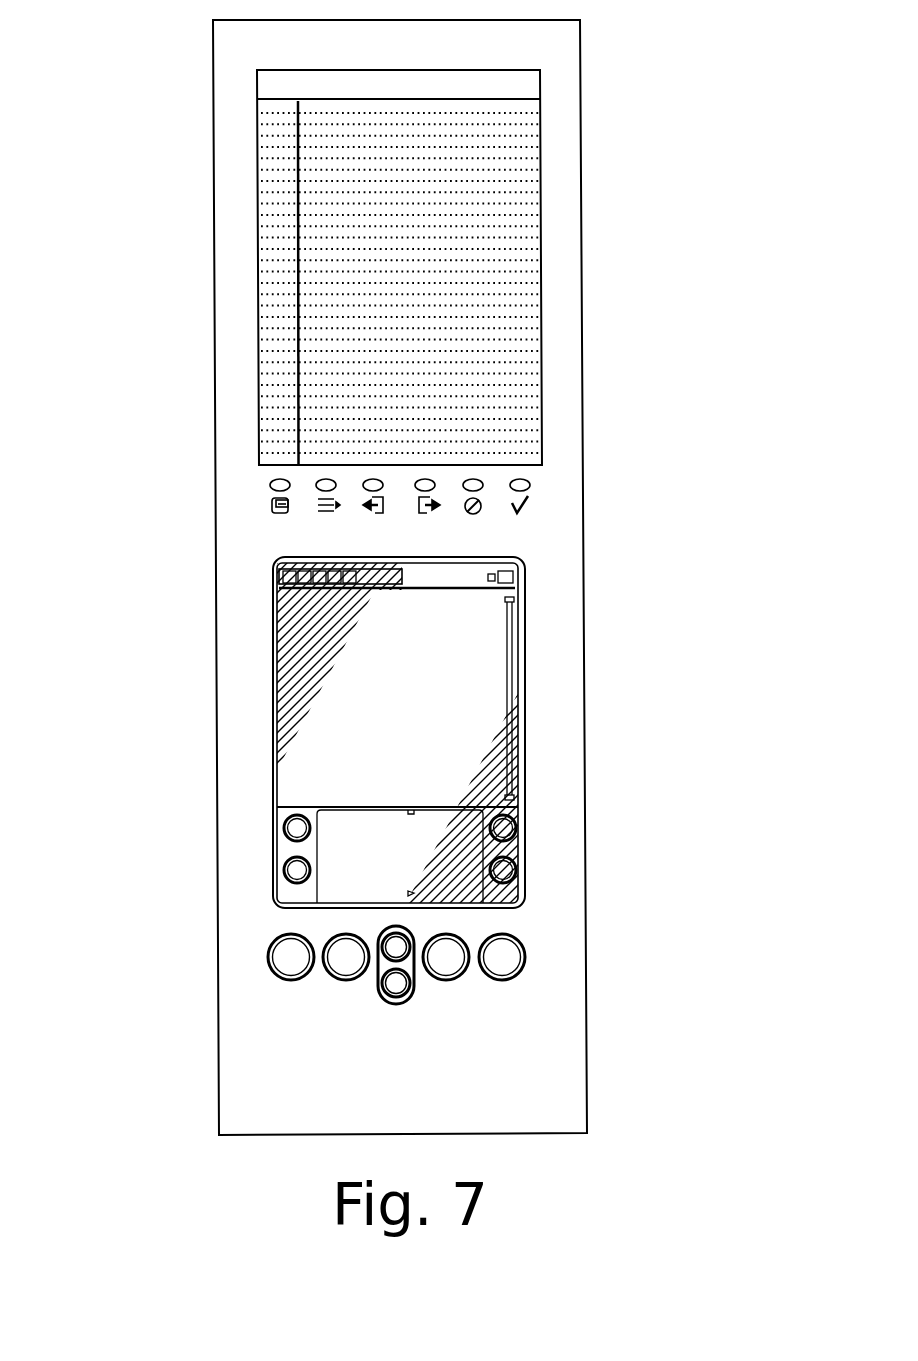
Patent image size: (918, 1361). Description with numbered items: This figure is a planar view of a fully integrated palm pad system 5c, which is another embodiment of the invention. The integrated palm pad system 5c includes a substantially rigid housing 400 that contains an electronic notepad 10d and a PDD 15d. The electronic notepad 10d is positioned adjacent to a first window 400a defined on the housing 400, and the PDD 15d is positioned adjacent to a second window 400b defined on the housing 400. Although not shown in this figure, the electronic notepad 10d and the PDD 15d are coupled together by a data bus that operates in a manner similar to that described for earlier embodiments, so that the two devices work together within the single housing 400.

The integrated palm pad system 5c is at (183, 1137).
The electronic notepad 10d is at (543, 363).
The upper portion of overlay 400a is at (255, 418).
The housing 400 is at (215, 692).
The PDD 15d is at (530, 712).
The lower portion of overlay 400b is at (270, 765).